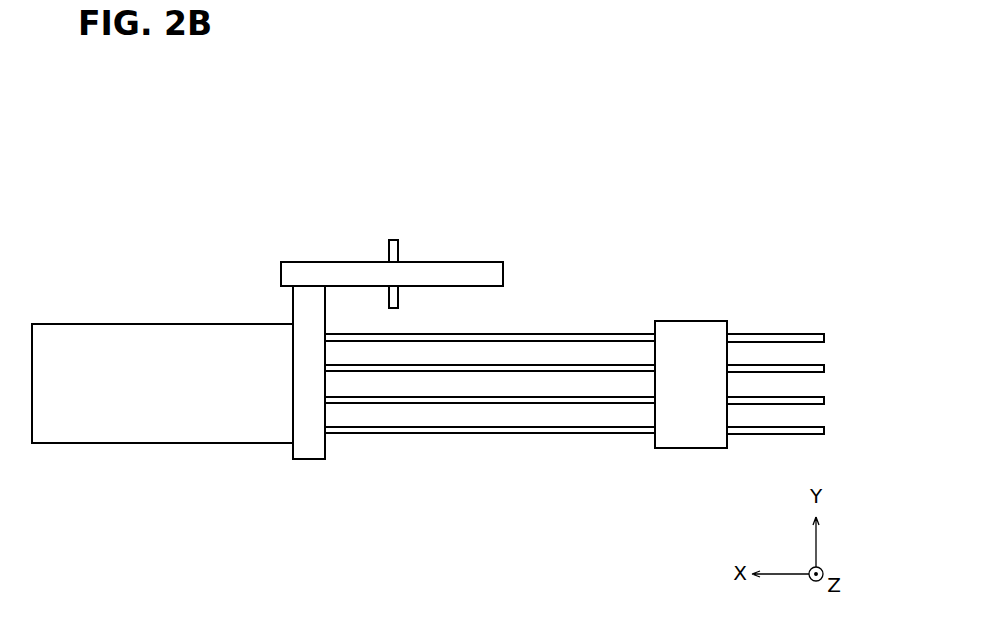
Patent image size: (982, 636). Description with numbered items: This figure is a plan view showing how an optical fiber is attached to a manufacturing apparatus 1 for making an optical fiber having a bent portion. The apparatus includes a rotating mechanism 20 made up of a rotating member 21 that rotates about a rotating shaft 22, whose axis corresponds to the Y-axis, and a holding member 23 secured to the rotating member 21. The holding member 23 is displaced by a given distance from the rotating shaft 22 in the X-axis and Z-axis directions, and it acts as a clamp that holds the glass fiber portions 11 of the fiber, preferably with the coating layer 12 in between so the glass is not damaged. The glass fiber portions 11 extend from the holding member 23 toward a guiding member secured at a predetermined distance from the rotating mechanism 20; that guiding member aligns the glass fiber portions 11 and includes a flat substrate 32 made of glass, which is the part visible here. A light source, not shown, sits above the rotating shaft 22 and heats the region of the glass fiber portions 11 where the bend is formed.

The manufacturing apparatus 1 is at (558, 258).
The glass fiber portions 11 is at (565, 434).
The coating layer 12 is at (135, 340).
The rotating mechanism 20 is at (288, 203).
The rotating member 21 is at (468, 276).
The rotating shaft 22 is at (392, 240).
The holding member 23 is at (307, 296).
The flat substrate 32 is at (697, 331).